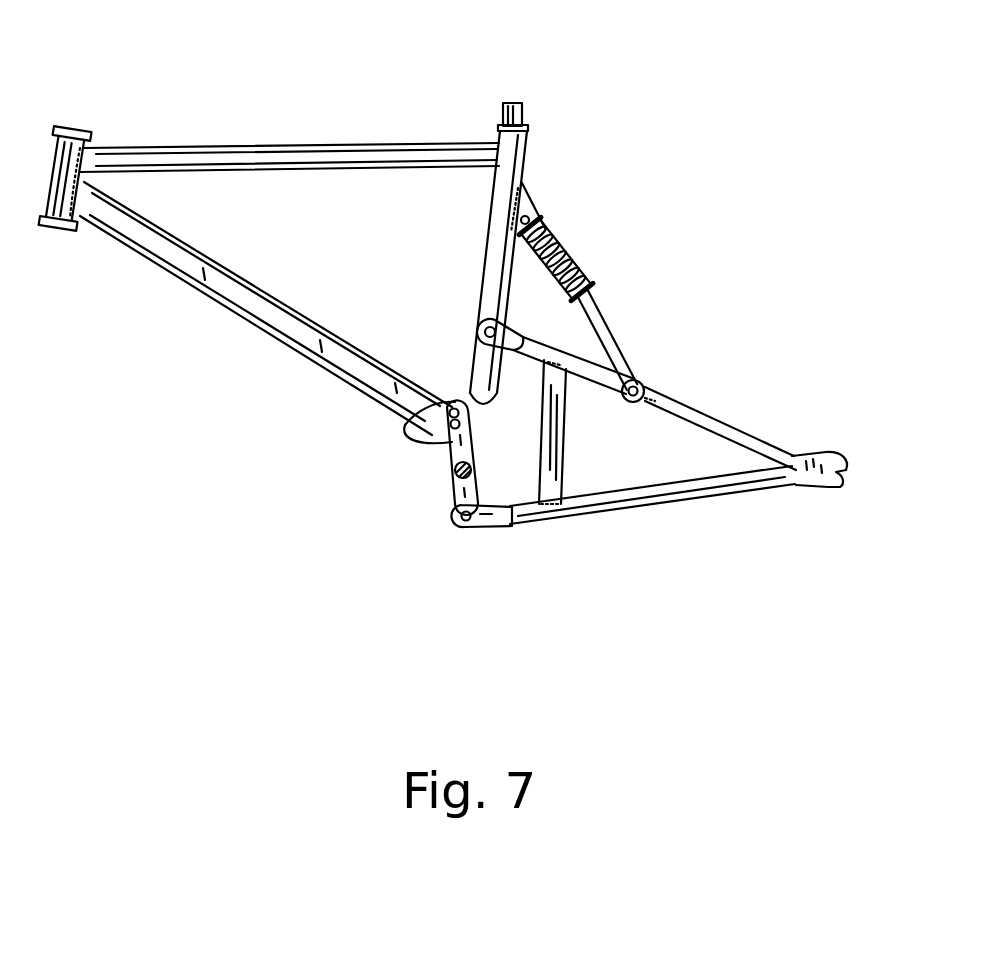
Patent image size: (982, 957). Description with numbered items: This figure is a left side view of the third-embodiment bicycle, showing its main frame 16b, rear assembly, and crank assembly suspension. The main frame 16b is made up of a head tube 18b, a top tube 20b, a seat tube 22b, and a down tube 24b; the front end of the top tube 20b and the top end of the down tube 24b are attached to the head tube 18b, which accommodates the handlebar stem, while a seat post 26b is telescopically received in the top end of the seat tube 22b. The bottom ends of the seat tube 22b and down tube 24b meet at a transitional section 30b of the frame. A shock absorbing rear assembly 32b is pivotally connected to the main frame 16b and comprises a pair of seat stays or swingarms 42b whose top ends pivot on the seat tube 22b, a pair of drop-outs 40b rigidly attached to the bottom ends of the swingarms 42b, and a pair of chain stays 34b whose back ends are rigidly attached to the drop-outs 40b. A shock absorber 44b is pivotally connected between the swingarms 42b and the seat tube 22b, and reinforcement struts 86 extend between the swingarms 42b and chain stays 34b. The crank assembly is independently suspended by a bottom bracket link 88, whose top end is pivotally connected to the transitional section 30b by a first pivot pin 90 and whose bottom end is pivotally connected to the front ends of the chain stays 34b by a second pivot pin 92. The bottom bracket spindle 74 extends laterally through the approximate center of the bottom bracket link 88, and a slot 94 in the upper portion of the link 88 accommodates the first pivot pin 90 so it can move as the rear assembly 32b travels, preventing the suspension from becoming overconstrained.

The main frame 16b is at (362, 103).
The head tube 18b is at (55, 168).
The top tube 20b is at (168, 150).
The seat tube 22b is at (524, 160).
The down tube 24b is at (262, 302).
The seat post 26b is at (520, 104).
The transitional section 30b is at (440, 428).
The shock absorbing rear assembly 32b is at (734, 359).
The chain stays 34b is at (671, 497).
The drop-outs 40b is at (820, 463).
The seat stays or swingarms 42b is at (728, 420).
The shock absorber 44b is at (590, 277).
The bottom bracket spindle 74 is at (456, 471).
The reinforcement struts 86 is at (551, 470).
The bottom bracket link 88 is at (452, 502).
The first pivot pin 90 is at (452, 400).
The second pivot pin 92 is at (465, 530).
The slot 94 is at (484, 417).